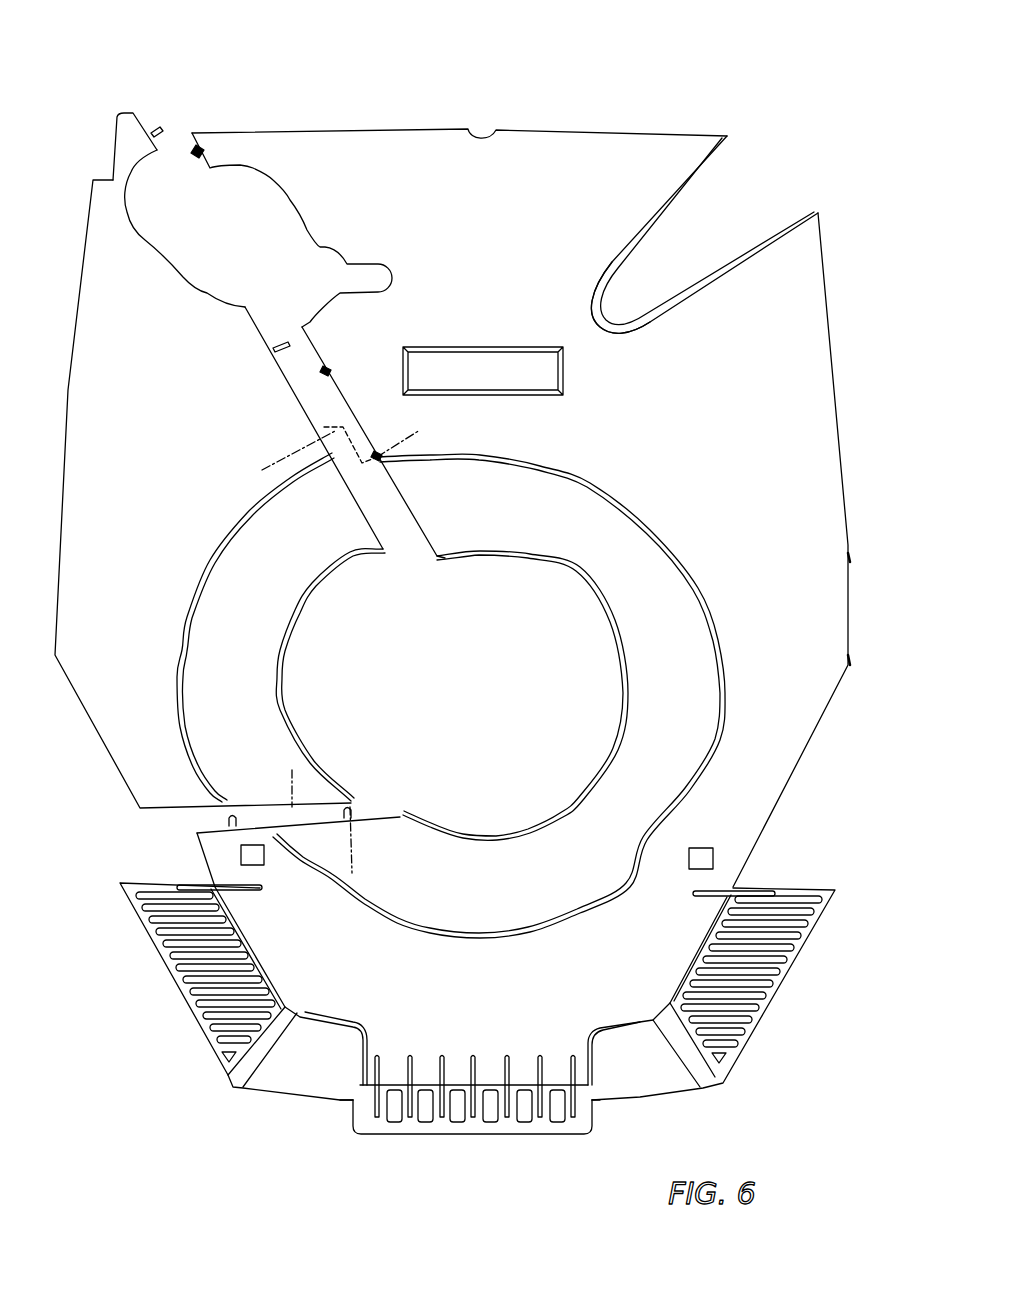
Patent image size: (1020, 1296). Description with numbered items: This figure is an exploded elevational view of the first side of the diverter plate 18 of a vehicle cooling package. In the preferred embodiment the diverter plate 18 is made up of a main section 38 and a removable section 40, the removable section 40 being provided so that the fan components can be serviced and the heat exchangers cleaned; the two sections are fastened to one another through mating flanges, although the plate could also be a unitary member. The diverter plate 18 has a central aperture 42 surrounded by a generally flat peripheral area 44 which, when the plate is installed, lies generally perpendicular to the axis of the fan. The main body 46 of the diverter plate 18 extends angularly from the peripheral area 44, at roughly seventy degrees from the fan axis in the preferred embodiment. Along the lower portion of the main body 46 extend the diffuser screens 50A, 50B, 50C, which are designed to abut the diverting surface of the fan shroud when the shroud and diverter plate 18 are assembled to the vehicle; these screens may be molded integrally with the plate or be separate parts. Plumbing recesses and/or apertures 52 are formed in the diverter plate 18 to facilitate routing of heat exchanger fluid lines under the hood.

The diverter plate 18 is at (585, 96).
The main section 38 is at (818, 273).
The removable section 40 is at (85, 338).
The central aperture 42 is at (487, 700).
The peripheral area 44 is at (577, 848).
The main body 46 is at (632, 147).
The plumbing recesses and/or apertures 52 is at (178, 182).
The diffuser screen 50A is at (475, 1125).
The diffuser screen 50B is at (170, 985).
The diffuser screen 50C is at (747, 1033).